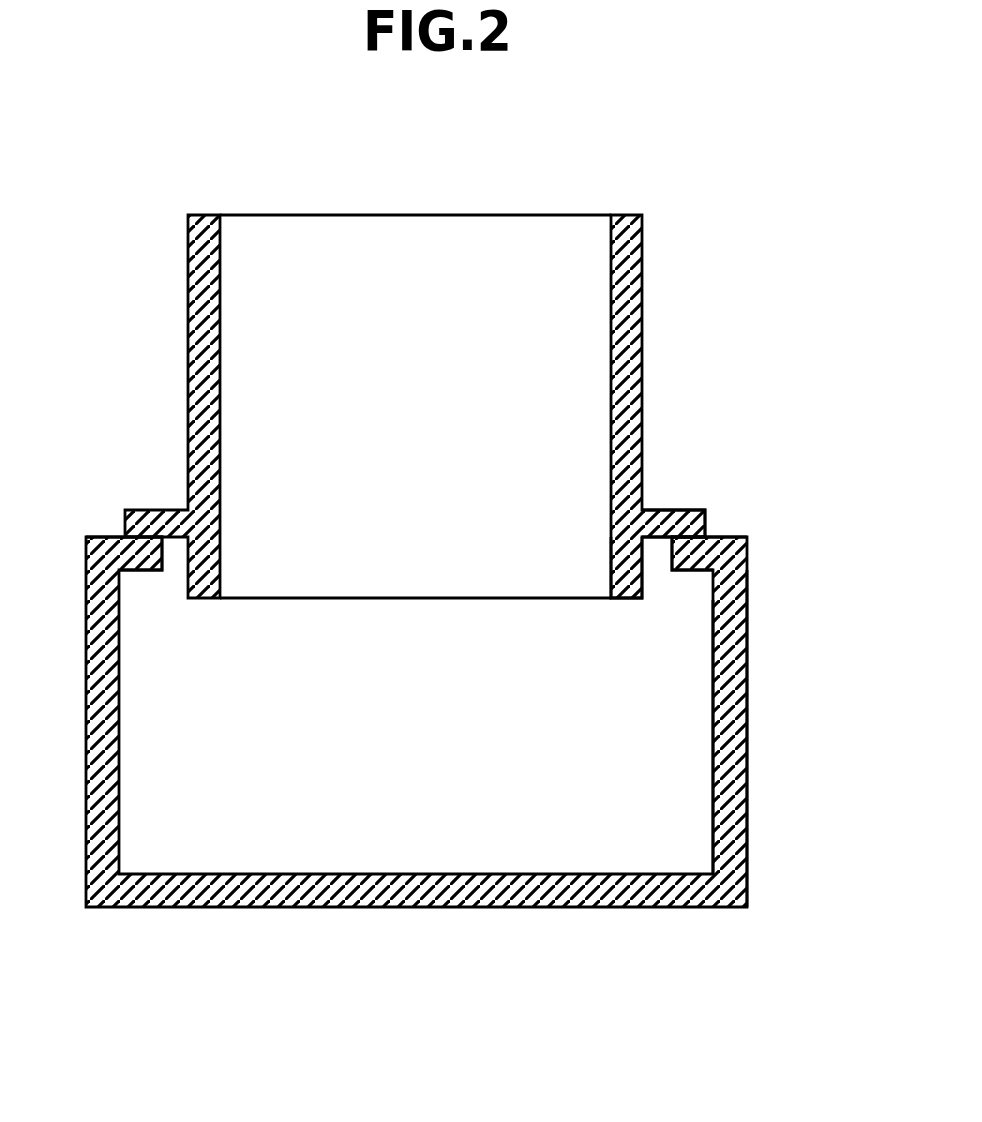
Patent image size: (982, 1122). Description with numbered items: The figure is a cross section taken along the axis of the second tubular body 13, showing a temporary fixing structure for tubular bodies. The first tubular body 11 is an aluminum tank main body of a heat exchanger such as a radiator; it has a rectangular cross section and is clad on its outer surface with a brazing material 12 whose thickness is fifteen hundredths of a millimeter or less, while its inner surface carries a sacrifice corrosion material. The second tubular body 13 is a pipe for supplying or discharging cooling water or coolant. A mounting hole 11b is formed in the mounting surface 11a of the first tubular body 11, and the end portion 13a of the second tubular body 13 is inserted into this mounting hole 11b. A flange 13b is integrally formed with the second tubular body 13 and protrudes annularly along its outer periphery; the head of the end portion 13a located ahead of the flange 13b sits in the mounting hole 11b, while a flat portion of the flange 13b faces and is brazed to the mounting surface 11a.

The first tubular body 11 is at (304, 919).
The mounting surface 11a is at (105, 537).
The mounting hole 11b is at (667, 558).
The brazing material 12 is at (745, 690).
The second tubular body 13 is at (679, 256).
The end portion 13a is at (620, 583).
The flange 13b is at (693, 527).